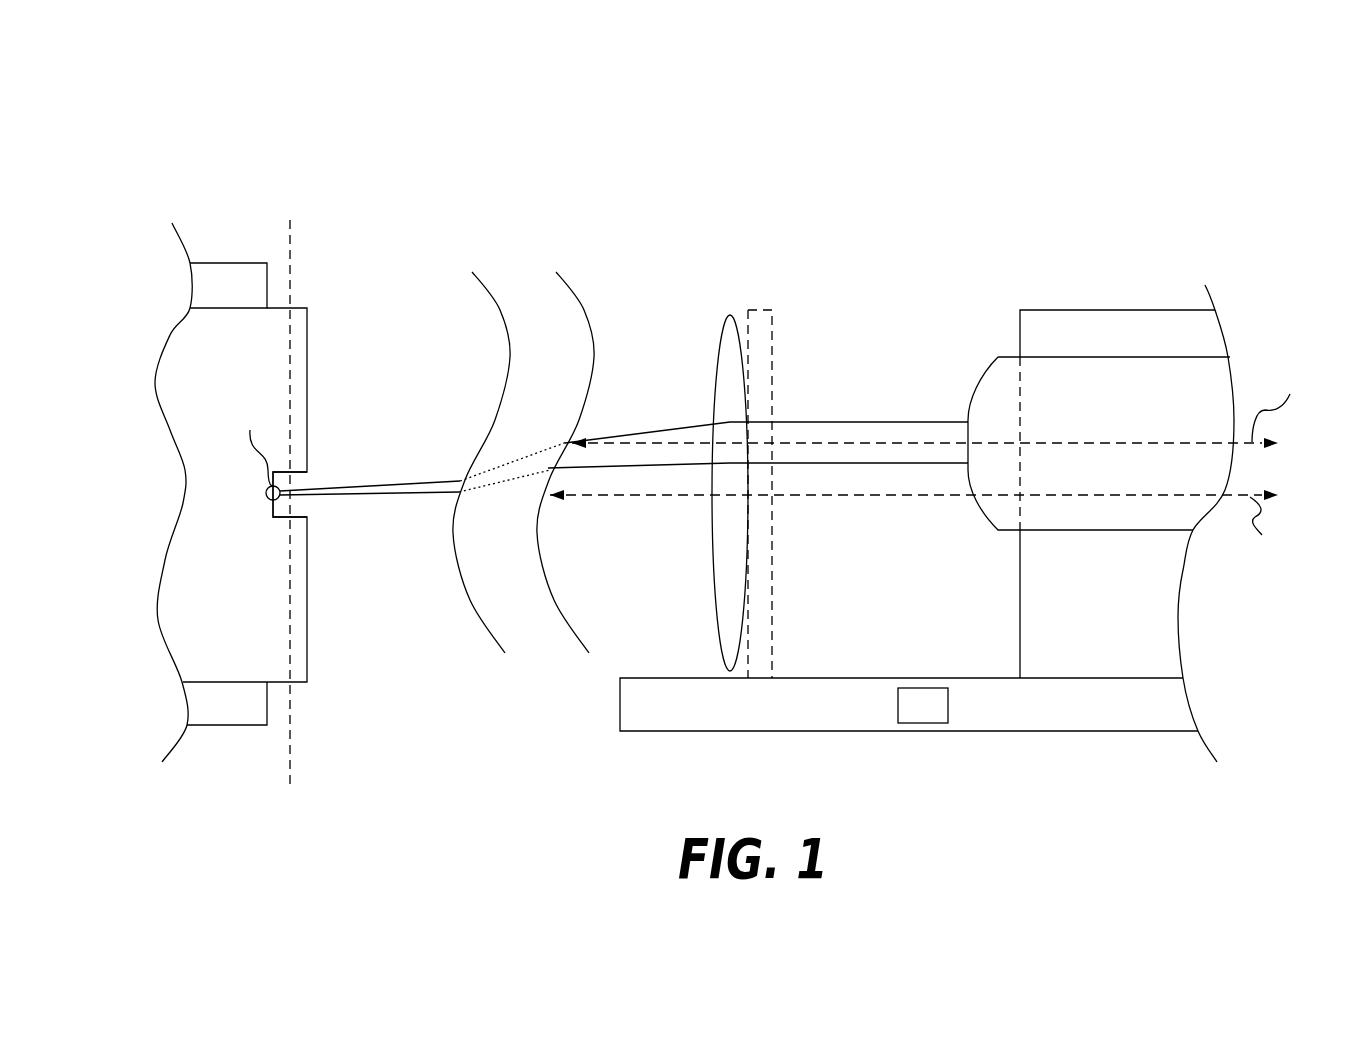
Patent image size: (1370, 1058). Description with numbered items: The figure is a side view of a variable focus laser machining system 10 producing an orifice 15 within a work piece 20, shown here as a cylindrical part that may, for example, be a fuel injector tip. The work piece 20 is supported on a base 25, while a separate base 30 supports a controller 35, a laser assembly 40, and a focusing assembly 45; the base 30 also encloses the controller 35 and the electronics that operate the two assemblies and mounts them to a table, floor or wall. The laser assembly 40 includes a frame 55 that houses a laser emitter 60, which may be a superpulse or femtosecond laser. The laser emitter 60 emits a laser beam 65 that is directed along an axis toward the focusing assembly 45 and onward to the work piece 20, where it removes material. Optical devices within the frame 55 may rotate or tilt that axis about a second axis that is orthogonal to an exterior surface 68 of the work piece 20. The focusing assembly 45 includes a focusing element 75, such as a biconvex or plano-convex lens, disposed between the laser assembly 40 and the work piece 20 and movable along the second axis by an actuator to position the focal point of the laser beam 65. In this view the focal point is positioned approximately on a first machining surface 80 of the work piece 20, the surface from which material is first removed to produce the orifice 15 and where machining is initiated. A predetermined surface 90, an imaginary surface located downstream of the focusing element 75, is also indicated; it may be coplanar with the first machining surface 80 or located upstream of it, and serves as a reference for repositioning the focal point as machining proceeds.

The variable focus laser machining system 10 is at (948, 153).
The orifice 15 is at (322, 481).
The work piece 20 is at (307, 355).
The base 25 is at (240, 262).
The base 30 is at (937, 732).
The controller 35 is at (923, 705).
The laser assembly 40 is at (1153, 217).
The focusing assembly 45 is at (745, 225).
The frame 55 is at (1158, 308).
The laser emitter 60 is at (1005, 355).
The laser beam 65 is at (855, 418).
The exterior surface 68 is at (307, 398).
The focusing element 75 is at (740, 318).
The first machining surface 80 is at (273, 514).
The predetermined surface 90 is at (292, 240).